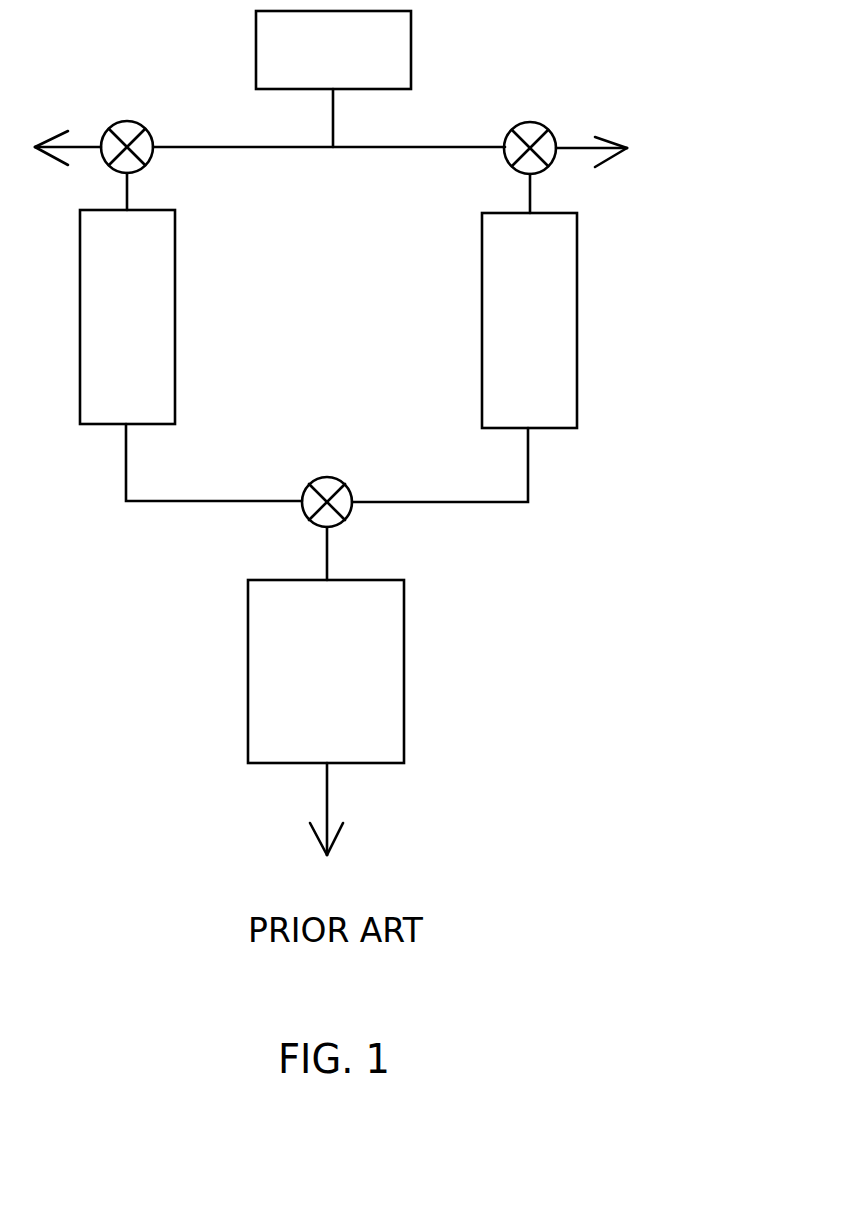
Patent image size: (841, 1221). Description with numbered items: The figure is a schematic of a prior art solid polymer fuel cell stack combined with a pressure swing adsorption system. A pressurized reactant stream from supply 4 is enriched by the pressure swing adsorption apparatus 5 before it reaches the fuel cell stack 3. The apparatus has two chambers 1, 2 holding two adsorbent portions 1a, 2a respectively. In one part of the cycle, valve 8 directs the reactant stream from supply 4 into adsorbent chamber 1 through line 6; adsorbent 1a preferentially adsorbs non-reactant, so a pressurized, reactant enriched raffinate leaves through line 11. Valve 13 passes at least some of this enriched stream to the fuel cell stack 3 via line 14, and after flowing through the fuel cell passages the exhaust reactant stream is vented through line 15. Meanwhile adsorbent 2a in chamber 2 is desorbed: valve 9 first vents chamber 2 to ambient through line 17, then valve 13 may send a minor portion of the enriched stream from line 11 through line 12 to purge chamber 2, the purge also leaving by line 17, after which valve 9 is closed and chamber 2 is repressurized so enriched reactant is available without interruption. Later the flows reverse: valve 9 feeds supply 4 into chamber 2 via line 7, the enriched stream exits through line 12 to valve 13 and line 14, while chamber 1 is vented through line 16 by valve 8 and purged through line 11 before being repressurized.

The adsorbent chamber 1 is at (80, 271).
The adsorbent 1a is at (112, 364).
The adsorbent chamber 2 is at (578, 275).
The adsorbent 2a is at (543, 367).
The fuel cell stack 3 is at (372, 656).
The supply 4 is at (385, 50).
The pressure swing adsorption apparatus 5 is at (658, 210).
The line 6 is at (127, 193).
The line 7 is at (532, 202).
The valve 8 is at (127, 121).
The valve 9 is at (535, 124).
The line 11 is at (189, 502).
The line 12 is at (466, 506).
The valve 13 is at (345, 481).
The line 14 is at (327, 563).
The line 15 is at (328, 783).
The line 16 is at (100, 147).
The line 17 is at (560, 148).